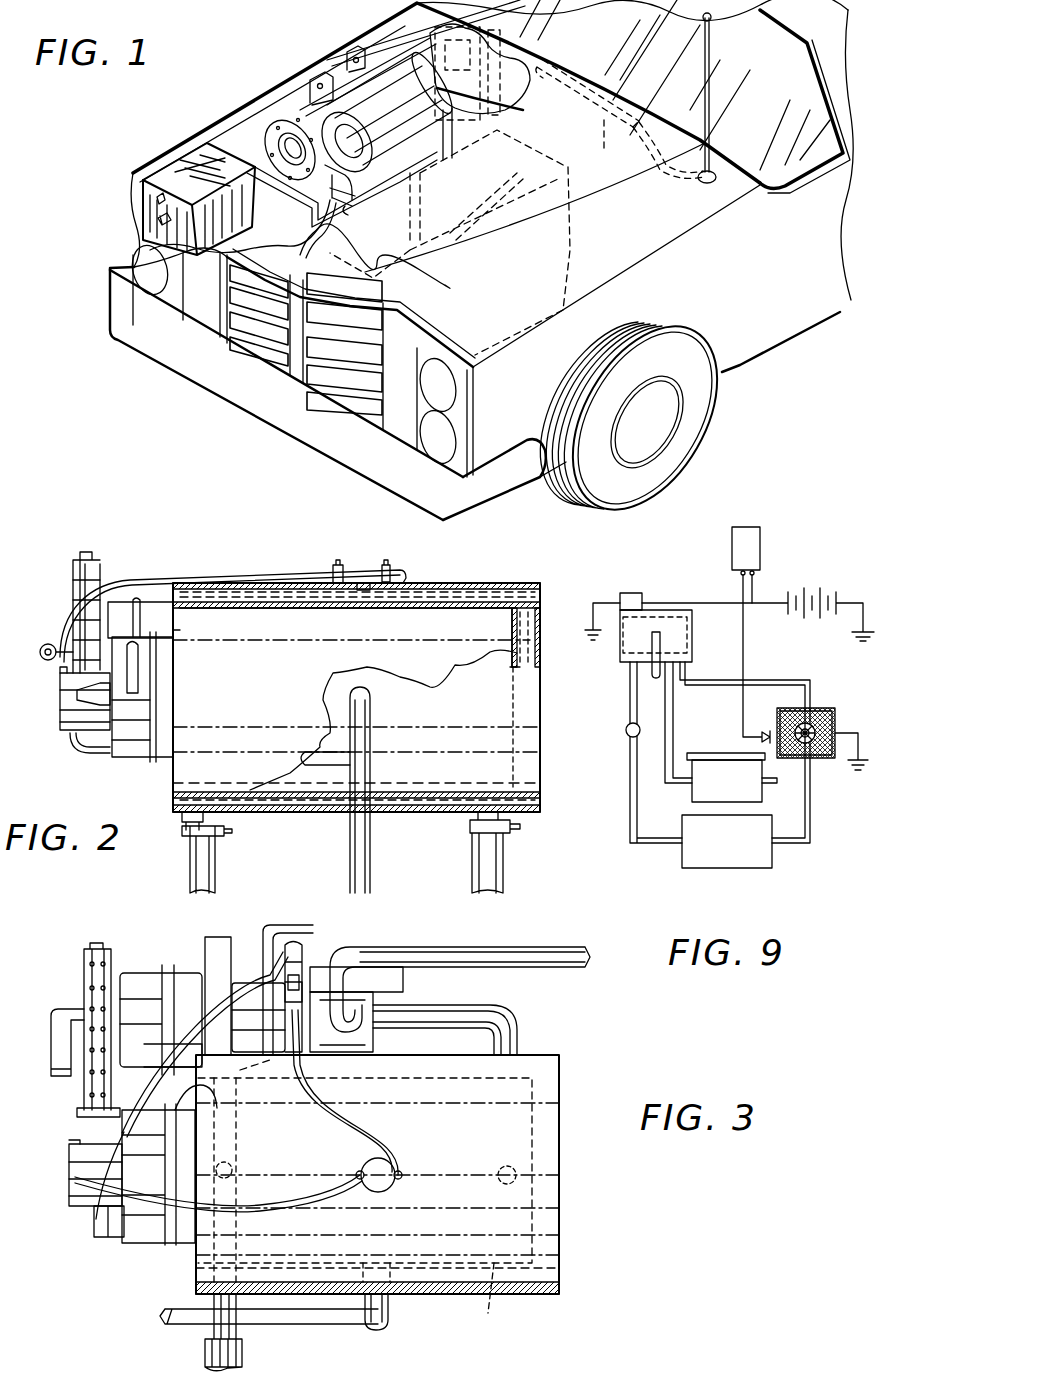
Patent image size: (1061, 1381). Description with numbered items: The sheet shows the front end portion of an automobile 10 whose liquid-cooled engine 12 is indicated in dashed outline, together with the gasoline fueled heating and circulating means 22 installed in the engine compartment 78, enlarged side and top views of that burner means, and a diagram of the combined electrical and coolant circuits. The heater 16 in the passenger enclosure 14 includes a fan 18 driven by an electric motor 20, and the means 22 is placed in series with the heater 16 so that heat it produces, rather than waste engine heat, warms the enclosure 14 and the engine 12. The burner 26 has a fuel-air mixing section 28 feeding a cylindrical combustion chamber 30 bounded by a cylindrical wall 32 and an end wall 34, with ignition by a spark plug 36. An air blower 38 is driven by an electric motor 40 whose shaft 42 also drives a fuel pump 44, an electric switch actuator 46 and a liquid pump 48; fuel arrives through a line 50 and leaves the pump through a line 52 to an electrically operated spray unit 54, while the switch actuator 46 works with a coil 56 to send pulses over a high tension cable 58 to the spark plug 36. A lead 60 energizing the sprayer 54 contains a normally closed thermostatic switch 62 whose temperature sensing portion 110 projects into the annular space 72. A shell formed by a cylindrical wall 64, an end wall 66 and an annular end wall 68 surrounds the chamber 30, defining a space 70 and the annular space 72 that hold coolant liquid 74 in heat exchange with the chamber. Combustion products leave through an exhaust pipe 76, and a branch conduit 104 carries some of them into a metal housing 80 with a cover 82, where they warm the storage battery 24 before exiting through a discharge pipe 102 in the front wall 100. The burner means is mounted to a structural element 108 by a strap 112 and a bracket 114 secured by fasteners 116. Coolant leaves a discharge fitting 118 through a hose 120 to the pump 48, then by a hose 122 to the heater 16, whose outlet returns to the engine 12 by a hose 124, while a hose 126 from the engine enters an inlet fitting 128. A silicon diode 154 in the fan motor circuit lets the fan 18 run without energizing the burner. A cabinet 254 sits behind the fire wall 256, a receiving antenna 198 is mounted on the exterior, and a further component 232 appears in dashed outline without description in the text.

In FIG. 1, the automobile 10 is at (822, 341).
In FIG. 1, the internal combustion engine 12 is at (570, 242).
In FIG. 9, the internal combustion engine 12 is at (768, 866).
In FIG. 1, the passenger enclosure 14 is at (660, 92).
In FIG. 1, the heater 16 is at (488, 80).
In FIG. 9, the heater 16 is at (846, 728).
In FIG. 1, the fan 18 is at (465, 24).
In FIG. 9, the fan 18 is at (808, 712).
In FIG. 1, the electric motor 20 is at (510, 20).
In FIG. 9, the electric motor 20 is at (815, 757).
In FIG. 1, the gasoline fueled heating and circulating means 22 is at (265, 118).
In FIG. 2, the gasoline fueled heating and circulating means 22 is at (80, 528).
In FIG. 9, the gasoline fueled heating and circulating means 22 is at (682, 608).
In FIG. 3, the gasoline fueled heating and circulating means 22 is at (583, 1068).
In FIG. 9, the electric storage battery 24 is at (807, 588).
In FIG. 3, the gasoline fueled burner 26 is at (127, 950).
In FIG. 2, the fuel-air mixing section 28 is at (140, 757).
In FIG. 3, the fuel-air mixing section 28 is at (155, 1245).
In FIG. 2, the combustion chamber 30 is at (470, 623).
In FIG. 2, the cylindrical wall 32 is at (412, 603).
In FIG. 3, the cylindrical wall 32 is at (497, 1302).
In FIG. 2, the end wall 34 is at (520, 630).
In FIG. 3, the end wall 34 is at (532, 1125).
In FIG. 2, the spark plug 36 is at (80, 712).
In FIG. 3, the spark plug 36 is at (100, 1240).
In FIG. 1, the air blower 38 is at (262, 140).
In FIG. 2, the air blower 38 is at (73, 605).
In FIG. 3, the air blower 38 is at (84, 1082).
In FIG. 2, the electric motor 40 is at (152, 600).
In FIG. 3, the electric motor 40 is at (185, 972).
In FIG. 3, the shaft 42 is at (84, 1012).
In FIG. 3, the fuel pump 44 is at (255, 1005).
In FIG. 3, the electric switch actuator 46 is at (290, 1050).
In FIG. 3, the liquid pump 48 is at (363, 985).
In FIG. 3, the line 50 is at (300, 920).
In FIG. 3, the line 52 is at (208, 1105).
In FIG. 2, the fuel spray unit 54 is at (60, 688).
In FIG. 3, the fuel spray unit 54 is at (76, 1210).
In FIG. 3, the coil 56 is at (303, 955).
In FIG. 3, the high tension electric cable 58 is at (79, 1179).
In FIG. 2, the lead 60 is at (310, 567).
In FIG. 3, the lead 60 is at (315, 1193).
In FIG. 2, the thermostatic switch 62 is at (355, 577).
In FIG. 3, the thermostatic switch 62 is at (392, 1186).
In FIG. 2, the cylindrical wall 64 is at (463, 583).
In FIG. 3, the cylindrical wall 64 is at (538, 1052).
In FIG. 2, the end wall 66 is at (543, 667).
In FIG. 3, the end wall 66 is at (562, 1218).
In FIG. 2, the annular end wall 68 is at (205, 597).
In FIG. 2, the space 70 is at (473, 657).
In FIG. 2, the annular space 72 is at (215, 610).
In FIG. 2, the liquid 74 is at (262, 585).
In FIG. 2, the exhaust pipe 76 is at (353, 722).
In FIG. 9, the exhaust pipe 76 is at (656, 680).
In FIG. 3, the exhaust pipe 76 is at (392, 1312).
In FIG. 1, the engine compartment 78 is at (248, 143).
In FIG. 1, the metal housing 80 is at (240, 243).
In FIG. 9, the metal housing 80 is at (710, 782).
In FIG. 1, the cover 82 is at (172, 172).
In FIG. 1, the front wall 100 is at (155, 200).
In FIG. 1, the discharge pipe 102 is at (158, 222).
In FIG. 1, the conduit 104 is at (290, 192).
In FIG. 2, the conduit 104 is at (333, 765).
In FIG. 9, the conduit 104 is at (676, 728).
In FIG. 3, the conduit 104 is at (330, 1325).
In FIG. 1, the structural element 108 is at (300, 92).
In FIG. 2, the temperature sensing portion 110 is at (350, 592).
In FIG. 3, the strap 112 is at (220, 948).
In FIG. 1, the bracket 114 is at (328, 46).
In FIG. 1, the fasteners 116 is at (335, 62).
In FIG. 2, the discharge fitting 118 is at (503, 812).
In FIG. 3, the discharge fitting 118 is at (520, 1170).
In FIG. 1, the hose 120 is at (443, 162).
In FIG. 2, the hose 120 is at (503, 867).
In FIG. 3, the hose 120 is at (462, 1012).
In FIG. 1, the hose 122 is at (390, 40).
In FIG. 9, the hose 122 is at (708, 684).
In FIG. 3, the hose 122 is at (513, 970).
In FIG. 9, the hose 124 is at (810, 832).
In FIG. 1, the hose 126 is at (342, 215).
In FIG. 2, the hose 126 is at (215, 860).
In FIG. 9, the hose 126 is at (628, 812).
In FIG. 3, the hose 126 is at (242, 1340).
In FIG. 2, the inlet fitting 128 is at (185, 818).
In FIG. 9, the silicon diode 154 is at (760, 720).
In FIG. 1, the receiving antenna 198 is at (707, 80).
In FIG. 1, the duct 232 is at (583, 68).
In FIG. 1, the cabinet 254 is at (606, 147).
In FIG. 1, the fire wall 256 is at (513, 73).